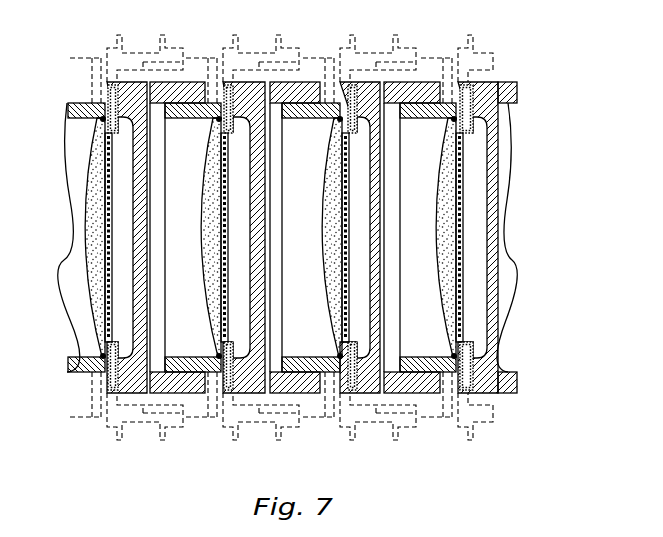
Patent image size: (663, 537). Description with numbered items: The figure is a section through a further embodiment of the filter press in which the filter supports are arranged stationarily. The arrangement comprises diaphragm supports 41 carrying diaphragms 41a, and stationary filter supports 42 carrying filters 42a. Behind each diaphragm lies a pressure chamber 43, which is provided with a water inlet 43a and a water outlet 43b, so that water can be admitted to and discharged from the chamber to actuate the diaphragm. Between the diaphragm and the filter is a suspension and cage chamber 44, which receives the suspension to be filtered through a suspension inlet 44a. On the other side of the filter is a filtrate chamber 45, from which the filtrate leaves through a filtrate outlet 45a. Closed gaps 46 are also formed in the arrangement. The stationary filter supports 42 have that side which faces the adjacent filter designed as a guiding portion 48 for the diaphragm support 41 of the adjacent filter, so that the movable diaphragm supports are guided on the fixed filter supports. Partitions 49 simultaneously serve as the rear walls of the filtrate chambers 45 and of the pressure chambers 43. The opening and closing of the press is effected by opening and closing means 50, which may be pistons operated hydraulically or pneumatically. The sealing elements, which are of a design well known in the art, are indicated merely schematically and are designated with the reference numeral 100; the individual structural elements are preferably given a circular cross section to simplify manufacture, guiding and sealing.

The diaphragm support 41 is at (452, 103).
The diaphragm 41a is at (448, 132).
The filter support 42 is at (351, 84).
The filter 42a is at (468, 169).
The pressure chamber 43 is at (408, 237).
The water inlet 43a is at (385, 82).
The water outlet 43b is at (388, 388).
The suspension and cage chamber 44 is at (450, 243).
The suspension inlet 44a is at (470, 82).
The filtrate chamber 45 is at (478, 303).
The filtrate outlet 45a is at (473, 394).
The closed gap 46 is at (339, 374).
The guiding portion 48 is at (296, 88).
The partition 49 is at (382, 300).
The opening and closing means 50 is at (253, 58).
The sealing elements 100 is at (226, 364).